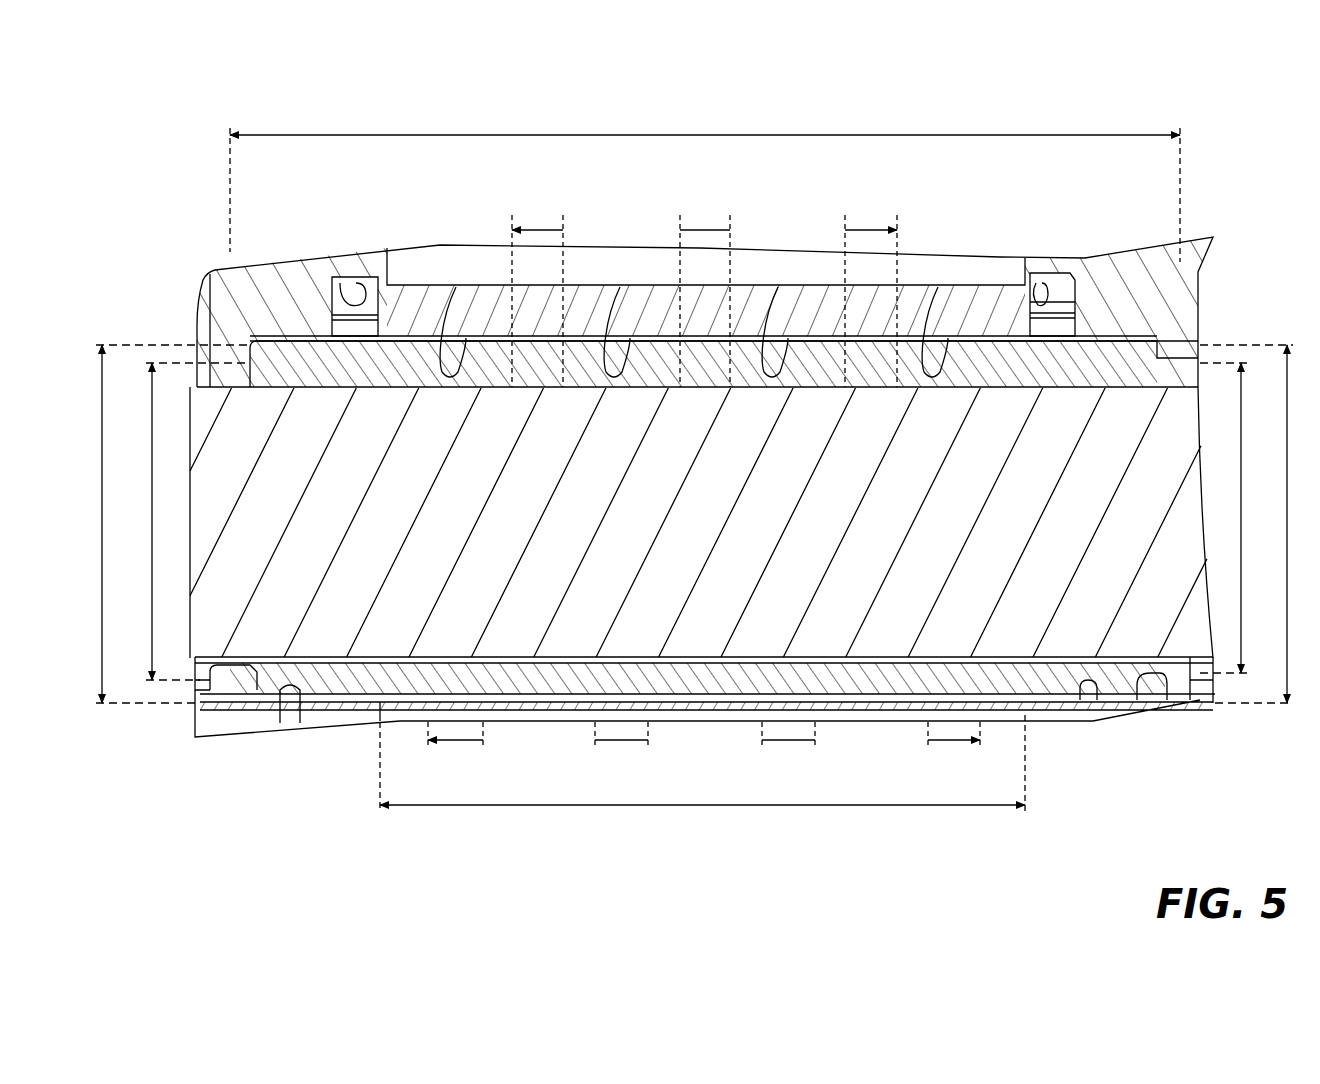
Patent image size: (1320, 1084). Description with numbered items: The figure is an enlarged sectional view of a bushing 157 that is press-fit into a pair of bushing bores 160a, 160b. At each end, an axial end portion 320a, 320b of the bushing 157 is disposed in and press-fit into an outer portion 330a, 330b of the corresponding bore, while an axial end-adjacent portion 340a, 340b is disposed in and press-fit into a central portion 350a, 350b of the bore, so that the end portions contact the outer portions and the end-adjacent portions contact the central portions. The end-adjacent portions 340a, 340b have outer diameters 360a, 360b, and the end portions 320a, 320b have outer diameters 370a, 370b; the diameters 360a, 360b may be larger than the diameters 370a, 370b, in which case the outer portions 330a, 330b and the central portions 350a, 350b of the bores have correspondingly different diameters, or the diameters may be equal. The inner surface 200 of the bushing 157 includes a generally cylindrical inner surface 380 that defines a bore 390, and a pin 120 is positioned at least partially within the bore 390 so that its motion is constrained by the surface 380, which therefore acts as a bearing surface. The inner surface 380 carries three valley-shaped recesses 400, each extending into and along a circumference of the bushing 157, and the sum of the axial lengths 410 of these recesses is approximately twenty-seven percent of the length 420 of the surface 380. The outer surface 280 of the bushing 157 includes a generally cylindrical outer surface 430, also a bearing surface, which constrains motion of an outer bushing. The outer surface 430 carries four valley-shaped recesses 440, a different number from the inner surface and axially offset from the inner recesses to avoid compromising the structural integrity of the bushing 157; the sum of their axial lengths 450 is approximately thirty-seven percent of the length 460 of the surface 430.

The pin 120 is at (1190, 488).
The bushing 157 is at (868, 352).
The bushing bore 160a is at (284, 292).
The bushing bore 160b is at (1128, 300).
The inner surface 200 is at (704, 744).
The outer surface 280 is at (703, 267).
The axial end portion 320a is at (224, 648).
The axial end portion 320b is at (1173, 648).
The outer portion 330a is at (247, 700).
The outer portion 330b is at (1157, 680).
The axial end-adjacent portion 340a is at (287, 645).
The axial end-adjacent portion 340b is at (1085, 650).
The central portion 350a is at (282, 698).
The central portion 350b is at (1083, 715).
The outer diameter 360a is at (102, 578).
The outer diameter 360b is at (1287, 568).
The outer diameter 370a is at (152, 478).
The outer diameter 370b is at (1241, 432).
The cylindrical inner surface 380 is at (704, 744).
The bore 390 is at (335, 727).
The valley-shaped recess 400 is at (367, 708).
The length 410 is at (538, 228).
The length 420 is at (700, 130).
The cylindrical outer surface 430 is at (988, 341).
The valley-shaped recess 440 is at (458, 350).
The length 450 is at (455, 742).
The length 460 is at (705, 807).